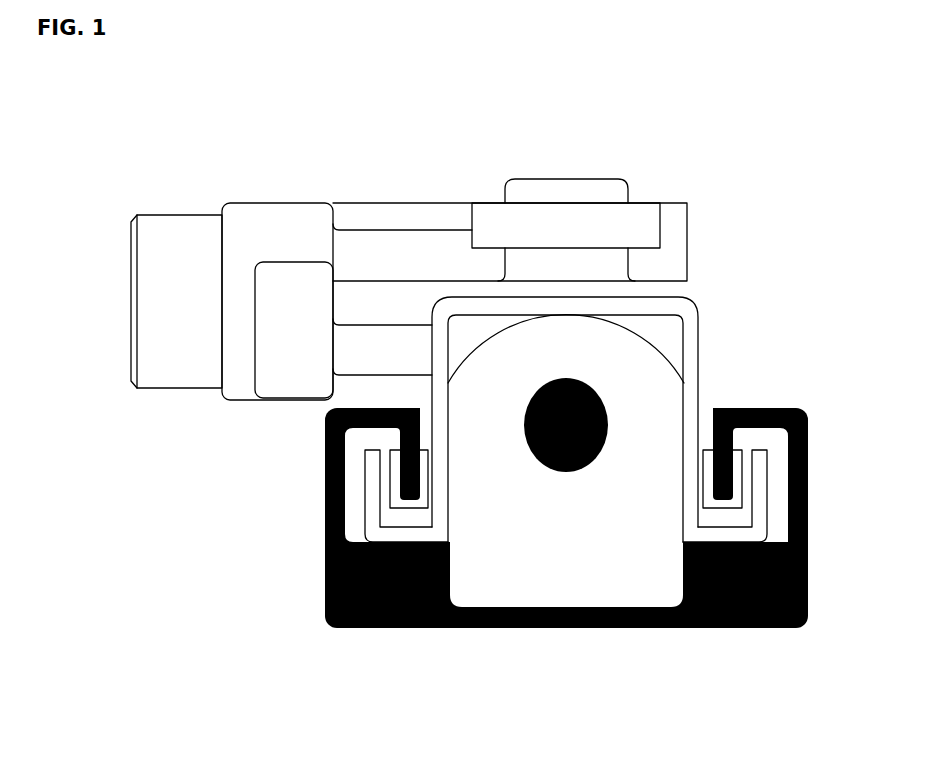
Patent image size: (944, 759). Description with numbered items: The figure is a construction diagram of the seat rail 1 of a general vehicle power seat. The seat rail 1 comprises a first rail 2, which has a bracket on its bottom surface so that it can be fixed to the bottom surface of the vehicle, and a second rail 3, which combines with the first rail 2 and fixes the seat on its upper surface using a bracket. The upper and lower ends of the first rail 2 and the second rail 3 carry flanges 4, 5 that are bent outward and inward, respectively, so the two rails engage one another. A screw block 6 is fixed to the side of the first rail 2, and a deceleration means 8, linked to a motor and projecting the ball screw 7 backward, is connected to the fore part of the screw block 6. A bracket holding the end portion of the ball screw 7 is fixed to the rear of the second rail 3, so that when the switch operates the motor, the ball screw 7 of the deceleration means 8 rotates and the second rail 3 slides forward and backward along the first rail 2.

The seat rail 1 is at (717, 277).
The first rail 2 is at (715, 628).
The second rail 3 is at (690, 357).
The flange 4 is at (397, 490).
The flange 5 is at (375, 473).
The screw block 6 is at (552, 582).
The ball screw 7 is at (583, 470).
The deceleration means 8 is at (387, 195).